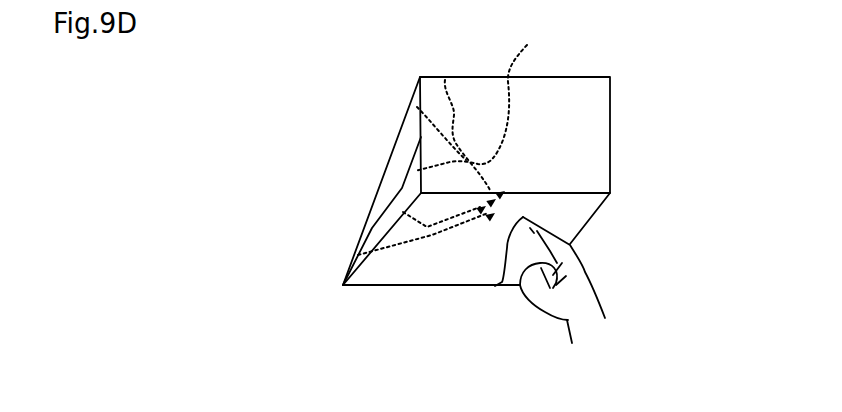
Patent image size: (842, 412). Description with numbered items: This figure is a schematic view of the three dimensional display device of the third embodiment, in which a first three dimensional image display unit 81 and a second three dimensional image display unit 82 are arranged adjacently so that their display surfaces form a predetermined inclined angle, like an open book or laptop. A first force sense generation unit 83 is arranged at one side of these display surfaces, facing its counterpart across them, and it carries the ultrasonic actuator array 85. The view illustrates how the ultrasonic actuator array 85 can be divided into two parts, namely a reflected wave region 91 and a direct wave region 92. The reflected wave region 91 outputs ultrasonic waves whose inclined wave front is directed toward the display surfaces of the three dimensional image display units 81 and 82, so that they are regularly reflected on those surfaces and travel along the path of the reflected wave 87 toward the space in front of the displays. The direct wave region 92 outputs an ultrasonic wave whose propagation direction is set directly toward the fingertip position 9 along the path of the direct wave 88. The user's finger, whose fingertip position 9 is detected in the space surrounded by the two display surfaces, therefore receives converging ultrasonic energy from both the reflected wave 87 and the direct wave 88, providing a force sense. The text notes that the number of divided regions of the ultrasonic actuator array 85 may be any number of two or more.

The first three dimensional image display unit 81 is at (583, 122).
The second three dimensional image display unit 82 is at (598, 206).
The first force sense generation unit 83 is at (379, 189).
The ultrasonic actuator array 85 is at (345, 284).
The reflected wave 87 is at (458, 144).
The direct wave 88 is at (461, 131).
The reflected wave region 91 is at (411, 184).
The direct wave region 92 is at (378, 230).
The fingertip position 9 is at (502, 286).